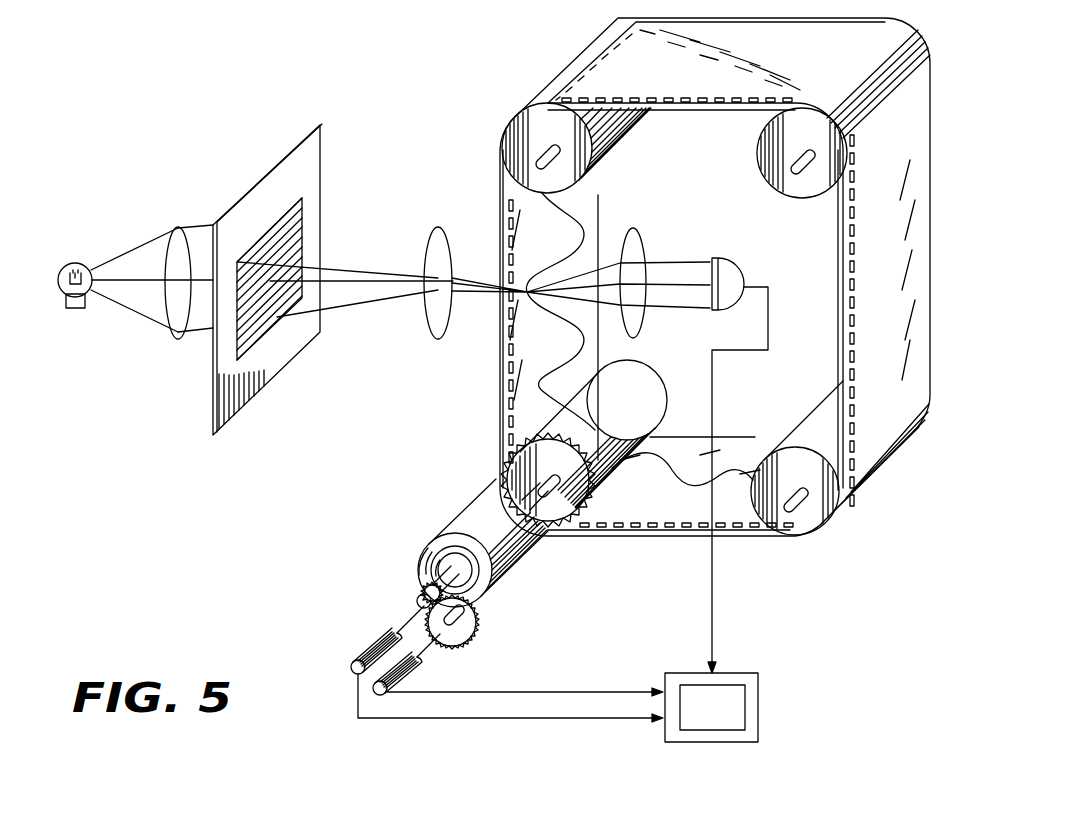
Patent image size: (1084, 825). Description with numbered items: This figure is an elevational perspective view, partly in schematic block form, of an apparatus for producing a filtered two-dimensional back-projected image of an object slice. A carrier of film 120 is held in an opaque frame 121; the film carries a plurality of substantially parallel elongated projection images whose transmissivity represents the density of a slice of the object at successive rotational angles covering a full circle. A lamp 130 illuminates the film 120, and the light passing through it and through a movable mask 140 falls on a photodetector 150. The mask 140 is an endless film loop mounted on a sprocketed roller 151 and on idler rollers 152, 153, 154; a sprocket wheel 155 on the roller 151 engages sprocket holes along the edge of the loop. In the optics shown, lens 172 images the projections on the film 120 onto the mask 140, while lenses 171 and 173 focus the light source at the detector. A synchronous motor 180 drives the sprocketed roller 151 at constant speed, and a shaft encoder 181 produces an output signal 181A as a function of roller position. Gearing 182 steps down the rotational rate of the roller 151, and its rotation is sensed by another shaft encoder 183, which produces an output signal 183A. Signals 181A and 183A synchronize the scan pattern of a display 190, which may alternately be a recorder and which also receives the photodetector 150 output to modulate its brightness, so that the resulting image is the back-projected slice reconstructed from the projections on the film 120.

The film 120 is at (295, 228).
The opaque frame 121 is at (223, 393).
The lamp 130 is at (78, 262).
The movable mask 140 is at (512, 397).
The photodetector 150 is at (720, 257).
The sprocketed roller 151 is at (643, 377).
The idler roller 152 is at (618, 148).
The idler roller 153 is at (758, 160).
The idler roller 154 is at (817, 405).
The sprocket wheel 155 is at (570, 443).
The lens 171 is at (178, 226).
The lens 172 is at (437, 226).
The lens 173 is at (638, 231).
The synchronous motor 180 is at (467, 505).
The shaft encoder 181 is at (380, 640).
The output signal 181A is at (440, 718).
The gearing 182 is at (420, 596).
The shaft encoder 183 is at (413, 668).
The output signal 183A is at (530, 688).
The display 190 is at (758, 708).